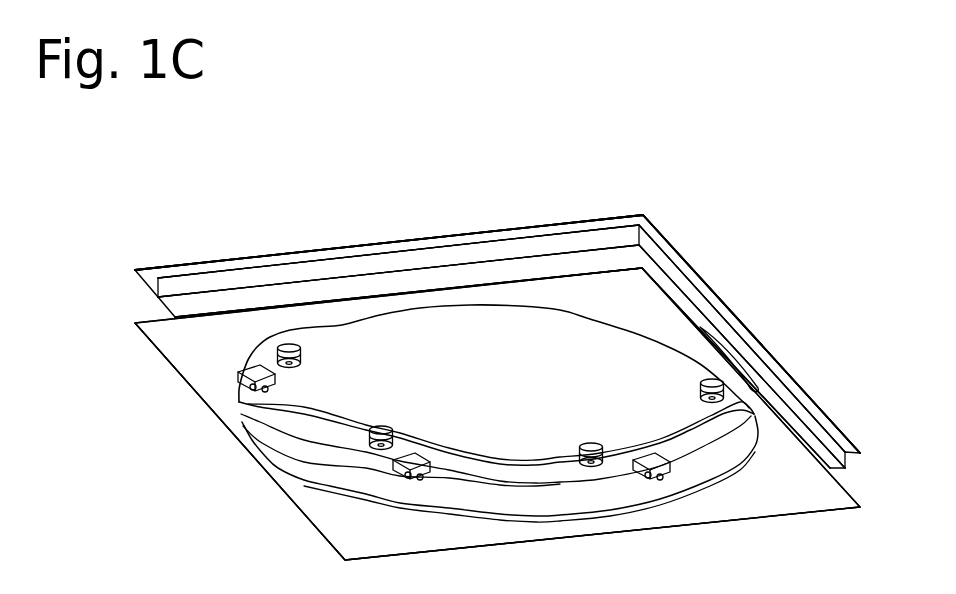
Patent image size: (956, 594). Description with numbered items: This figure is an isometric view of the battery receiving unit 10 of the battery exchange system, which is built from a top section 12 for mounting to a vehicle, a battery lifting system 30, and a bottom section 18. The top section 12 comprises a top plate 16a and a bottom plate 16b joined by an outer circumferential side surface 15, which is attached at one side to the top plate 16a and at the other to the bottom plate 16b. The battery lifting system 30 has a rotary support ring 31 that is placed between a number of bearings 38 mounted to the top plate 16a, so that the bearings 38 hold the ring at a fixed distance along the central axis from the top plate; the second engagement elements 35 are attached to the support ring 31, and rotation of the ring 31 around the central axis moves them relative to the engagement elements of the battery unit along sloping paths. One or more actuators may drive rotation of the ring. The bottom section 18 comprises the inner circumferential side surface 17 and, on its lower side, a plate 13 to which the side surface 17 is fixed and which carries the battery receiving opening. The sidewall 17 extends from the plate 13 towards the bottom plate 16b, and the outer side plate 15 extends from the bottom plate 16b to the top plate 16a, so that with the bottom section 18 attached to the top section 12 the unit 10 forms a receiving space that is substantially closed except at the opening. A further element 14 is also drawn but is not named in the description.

The battery receiving unit 10 is at (676, 208).
The top section 12 is at (530, 172).
The plate 13 is at (248, 325).
The support structure 14 is at (283, 118).
The outer circumferential side surface 15 is at (523, 248).
The top plate 16a is at (583, 223).
The bottom plate 16b is at (500, 265).
The inner circumferential side surface 17 is at (378, 288).
The bottom section 18 is at (228, 172).
The battery lifting system 30 is at (297, 429).
The support ring 31 is at (713, 430).
The second engagement elements 35 is at (652, 473).
The bearings 38 is at (578, 458).